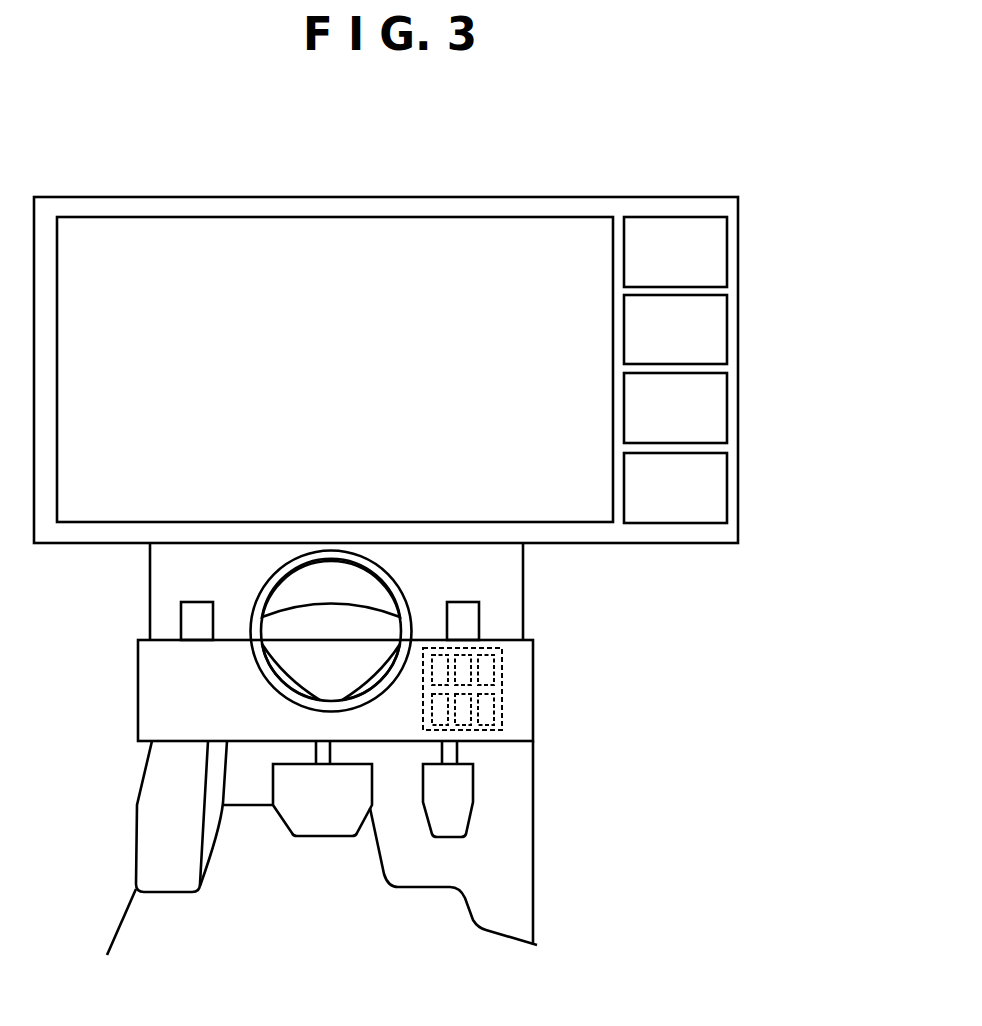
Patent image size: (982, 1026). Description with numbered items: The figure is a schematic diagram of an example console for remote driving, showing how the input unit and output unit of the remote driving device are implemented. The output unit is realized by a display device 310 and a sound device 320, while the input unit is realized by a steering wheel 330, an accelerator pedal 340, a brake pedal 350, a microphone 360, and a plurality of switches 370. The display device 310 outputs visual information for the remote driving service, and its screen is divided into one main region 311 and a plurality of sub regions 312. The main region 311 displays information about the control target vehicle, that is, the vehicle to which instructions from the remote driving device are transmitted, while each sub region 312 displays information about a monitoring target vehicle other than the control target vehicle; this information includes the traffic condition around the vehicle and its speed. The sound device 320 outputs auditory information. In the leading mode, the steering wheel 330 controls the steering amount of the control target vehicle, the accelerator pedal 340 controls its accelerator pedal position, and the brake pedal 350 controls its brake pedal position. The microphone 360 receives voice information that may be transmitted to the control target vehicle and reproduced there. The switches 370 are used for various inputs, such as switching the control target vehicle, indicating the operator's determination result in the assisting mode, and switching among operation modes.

The display device 310 is at (395, 197).
The main region 311 is at (222, 212).
The sub region 312 is at (727, 260).
The sound device 320 is at (463, 622).
The steering wheel 330 is at (257, 660).
The accelerator pedal 340 is at (449, 815).
The brake pedal 350 is at (328, 805).
The microphone 360 is at (197, 622).
The switches 370 is at (504, 684).